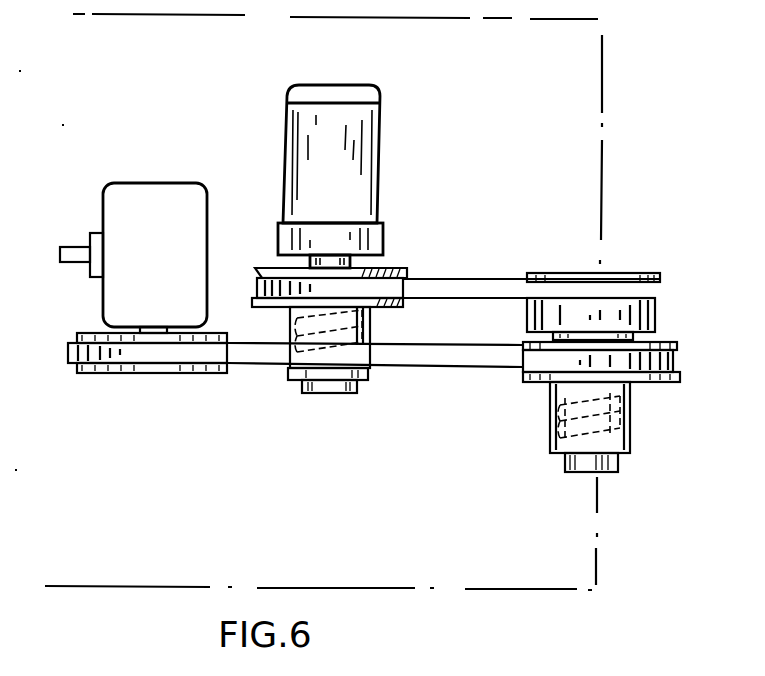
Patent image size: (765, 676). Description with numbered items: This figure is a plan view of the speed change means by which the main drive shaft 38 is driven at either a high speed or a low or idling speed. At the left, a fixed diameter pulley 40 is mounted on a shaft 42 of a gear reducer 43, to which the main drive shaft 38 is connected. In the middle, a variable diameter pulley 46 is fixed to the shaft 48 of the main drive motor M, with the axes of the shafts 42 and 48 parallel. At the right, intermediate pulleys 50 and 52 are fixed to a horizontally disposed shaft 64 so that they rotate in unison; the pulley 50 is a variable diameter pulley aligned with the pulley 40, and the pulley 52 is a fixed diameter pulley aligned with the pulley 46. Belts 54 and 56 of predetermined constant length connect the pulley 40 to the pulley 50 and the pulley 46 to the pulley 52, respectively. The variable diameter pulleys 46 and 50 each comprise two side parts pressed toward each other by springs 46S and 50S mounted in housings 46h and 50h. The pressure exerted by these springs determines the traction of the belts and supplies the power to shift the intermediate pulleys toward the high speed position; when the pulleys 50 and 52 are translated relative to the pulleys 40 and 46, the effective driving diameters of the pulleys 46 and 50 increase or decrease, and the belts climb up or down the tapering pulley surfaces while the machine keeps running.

The main drive shaft 38 is at (70, 247).
The gear reducer 43 is at (163, 199).
The shaft 42 is at (150, 332).
The fixed diameter pulley 40 is at (97, 375).
The main drive motor M is at (365, 152).
The shaft 48 is at (360, 263).
The variable diameter pulley 46 is at (262, 272).
The belt 56 is at (460, 293).
The housing 46h is at (372, 328).
The springs 46S is at (290, 330).
The belt 54 is at (440, 358).
The intermediate pulley 52 is at (657, 318).
The intermediate pulley 50 is at (673, 377).
The housing 50h is at (632, 430).
The springs 50S is at (560, 422).
The shaft 64 is at (620, 467).